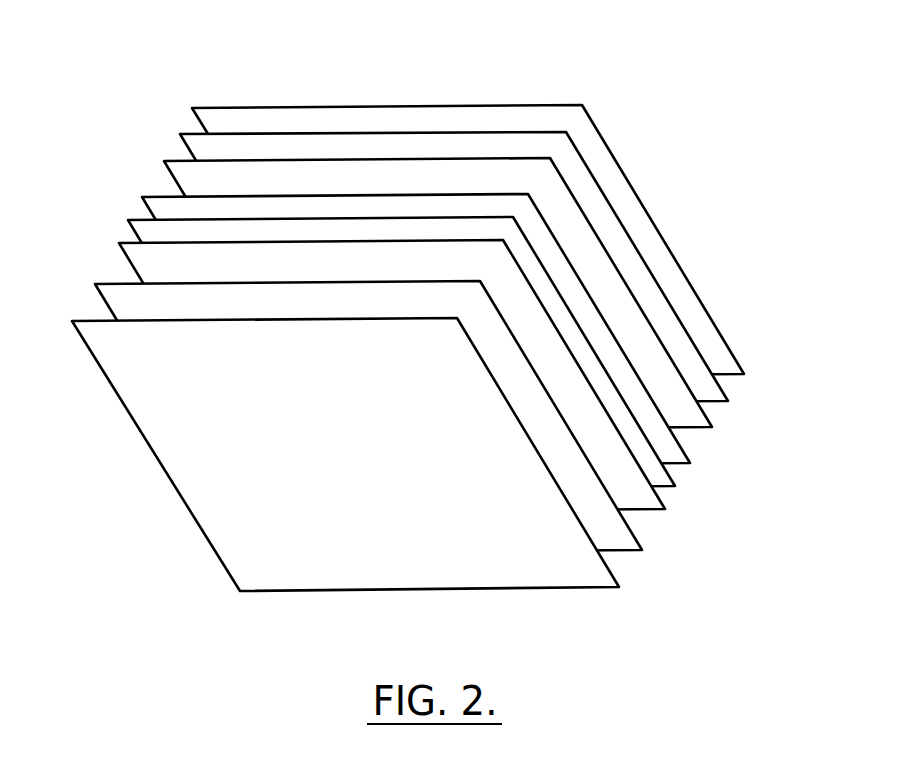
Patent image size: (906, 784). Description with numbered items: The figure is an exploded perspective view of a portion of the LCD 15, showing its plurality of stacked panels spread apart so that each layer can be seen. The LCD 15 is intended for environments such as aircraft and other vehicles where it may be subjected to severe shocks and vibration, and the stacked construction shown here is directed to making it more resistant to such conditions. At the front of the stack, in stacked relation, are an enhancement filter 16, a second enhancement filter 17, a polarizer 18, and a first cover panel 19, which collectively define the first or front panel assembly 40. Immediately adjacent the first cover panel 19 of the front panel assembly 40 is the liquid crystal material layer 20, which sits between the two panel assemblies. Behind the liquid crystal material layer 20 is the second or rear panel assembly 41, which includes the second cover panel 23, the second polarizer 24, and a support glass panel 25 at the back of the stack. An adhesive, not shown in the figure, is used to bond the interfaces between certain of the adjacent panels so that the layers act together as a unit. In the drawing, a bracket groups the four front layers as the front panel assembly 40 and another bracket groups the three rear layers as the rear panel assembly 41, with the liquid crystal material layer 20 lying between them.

The LCD 15 is at (701, 50).
The enhancement filter 16 is at (395, 472).
The second enhancement filter 17 is at (416, 432).
The polarizer 18 is at (442, 394).
The first cover panel 19 is at (450, 367).
The liquid crystal material layer 20 is at (449, 334).
The second cover panel 23 is at (480, 299).
The second polarizer 24 is at (495, 272).
The support glass panel 25 is at (497, 241).
The front panel assembly 40 is at (125, 206).
The rear panel assembly 41 is at (190, 90).